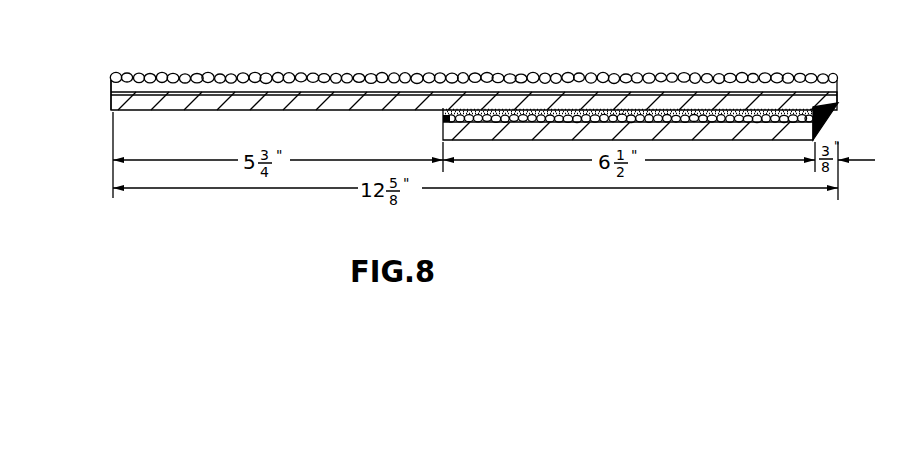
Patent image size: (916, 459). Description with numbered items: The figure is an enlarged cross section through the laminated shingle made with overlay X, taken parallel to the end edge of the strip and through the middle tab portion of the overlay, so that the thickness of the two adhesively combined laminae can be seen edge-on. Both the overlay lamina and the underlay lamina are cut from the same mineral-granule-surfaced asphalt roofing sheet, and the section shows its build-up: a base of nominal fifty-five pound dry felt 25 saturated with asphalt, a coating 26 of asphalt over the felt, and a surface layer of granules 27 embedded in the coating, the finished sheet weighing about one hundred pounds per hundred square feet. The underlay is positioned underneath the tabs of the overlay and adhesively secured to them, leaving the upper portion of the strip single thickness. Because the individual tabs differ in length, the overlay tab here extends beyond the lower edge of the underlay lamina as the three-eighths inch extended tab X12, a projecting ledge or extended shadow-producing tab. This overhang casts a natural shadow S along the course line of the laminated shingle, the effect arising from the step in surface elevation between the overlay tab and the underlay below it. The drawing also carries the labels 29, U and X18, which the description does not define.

The dry felt 25 is at (128, 98).
The coating 26 is at (505, 95).
The granules 27 is at (345, 78).
The adhesive coating 29 is at (442, 111).
The overlay X is at (178, 102).
The lower panel U is at (443, 125).
The hatched layer X18 is at (660, 97).
The extended tab X12 is at (833, 106).
The natural shadow S is at (836, 118).